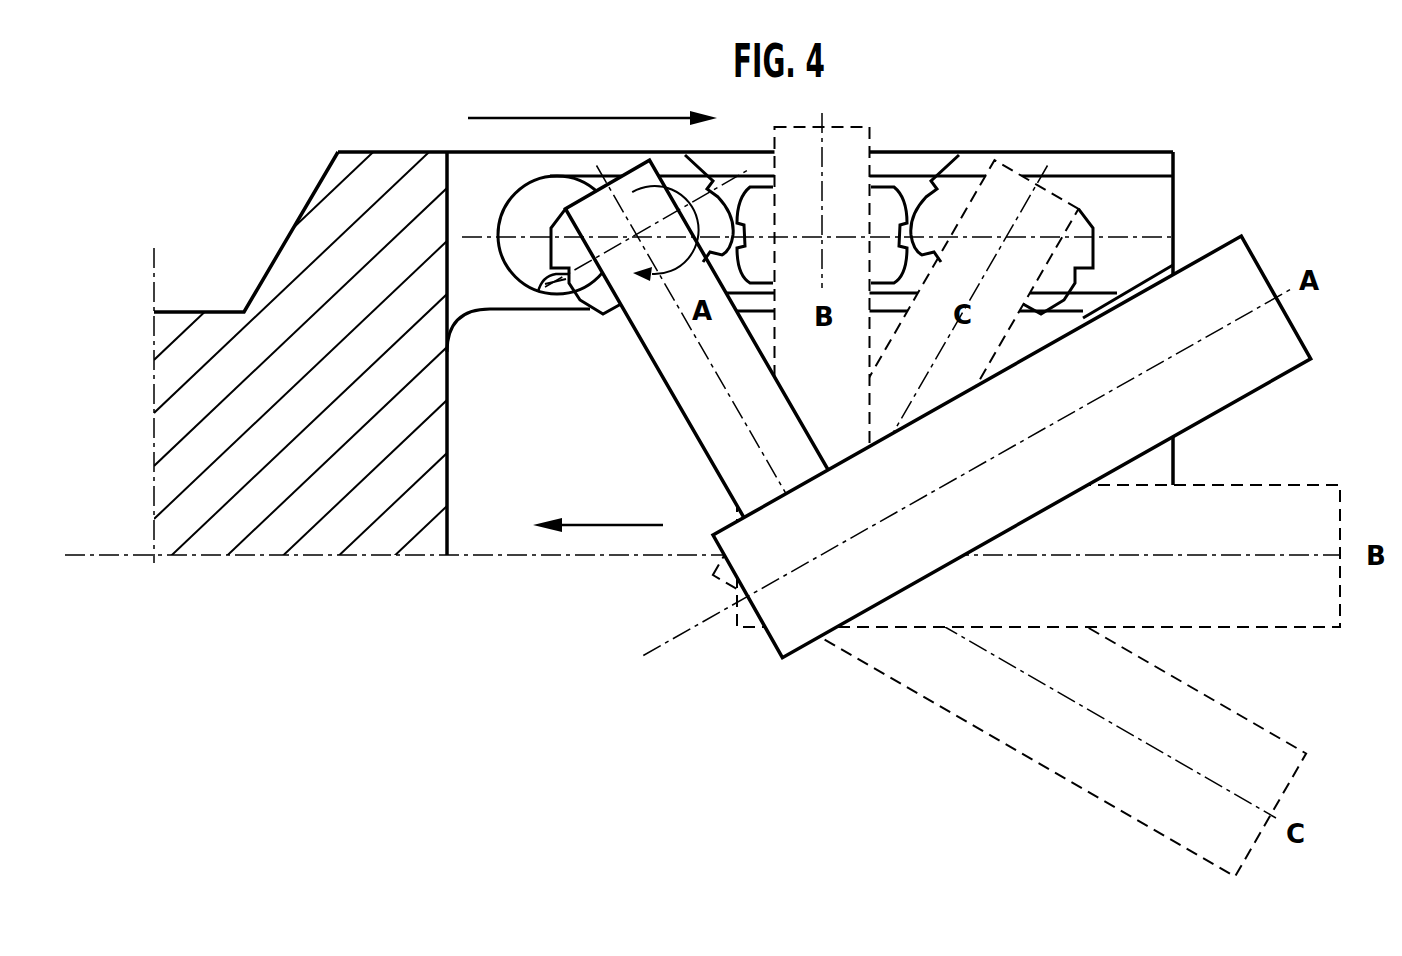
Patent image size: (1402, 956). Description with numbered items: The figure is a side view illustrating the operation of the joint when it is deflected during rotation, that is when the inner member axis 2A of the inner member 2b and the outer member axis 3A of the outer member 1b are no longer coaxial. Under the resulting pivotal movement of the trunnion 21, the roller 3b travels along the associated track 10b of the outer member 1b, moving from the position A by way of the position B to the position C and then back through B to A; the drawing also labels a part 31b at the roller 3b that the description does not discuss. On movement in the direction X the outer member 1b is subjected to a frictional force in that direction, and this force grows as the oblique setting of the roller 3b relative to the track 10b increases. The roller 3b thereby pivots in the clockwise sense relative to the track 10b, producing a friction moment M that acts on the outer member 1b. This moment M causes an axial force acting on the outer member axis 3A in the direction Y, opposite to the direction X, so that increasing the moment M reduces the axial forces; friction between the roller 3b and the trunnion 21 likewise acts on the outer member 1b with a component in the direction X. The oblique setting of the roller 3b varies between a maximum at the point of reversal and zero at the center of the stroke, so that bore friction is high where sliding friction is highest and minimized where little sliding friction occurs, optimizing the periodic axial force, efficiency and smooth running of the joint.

The outer member 1b is at (336, 210).
The track 10b is at (1152, 205).
The inner member 2b is at (1237, 278).
The trunnion 21 is at (706, 421).
The roller 3b is at (590, 290).
The roller retainer 31b is at (550, 277).
The inner member axis 2A is at (705, 616).
The outer member axis 3A is at (131, 556).
The friction moment M is at (665, 270).
The direction X is at (612, 118).
The direction Y is at (608, 525).